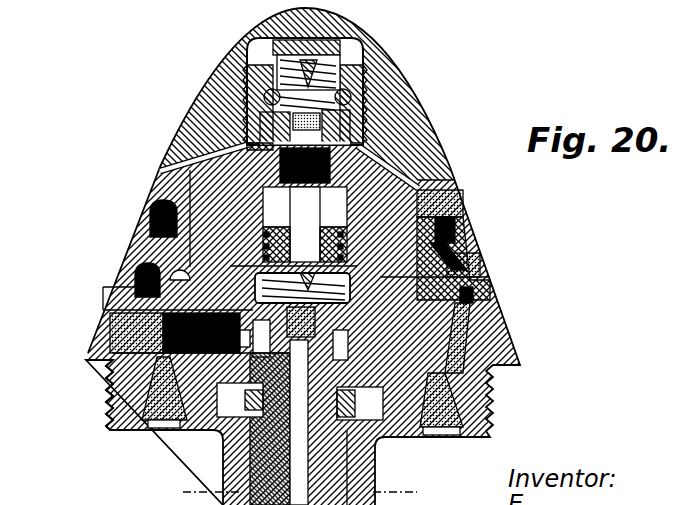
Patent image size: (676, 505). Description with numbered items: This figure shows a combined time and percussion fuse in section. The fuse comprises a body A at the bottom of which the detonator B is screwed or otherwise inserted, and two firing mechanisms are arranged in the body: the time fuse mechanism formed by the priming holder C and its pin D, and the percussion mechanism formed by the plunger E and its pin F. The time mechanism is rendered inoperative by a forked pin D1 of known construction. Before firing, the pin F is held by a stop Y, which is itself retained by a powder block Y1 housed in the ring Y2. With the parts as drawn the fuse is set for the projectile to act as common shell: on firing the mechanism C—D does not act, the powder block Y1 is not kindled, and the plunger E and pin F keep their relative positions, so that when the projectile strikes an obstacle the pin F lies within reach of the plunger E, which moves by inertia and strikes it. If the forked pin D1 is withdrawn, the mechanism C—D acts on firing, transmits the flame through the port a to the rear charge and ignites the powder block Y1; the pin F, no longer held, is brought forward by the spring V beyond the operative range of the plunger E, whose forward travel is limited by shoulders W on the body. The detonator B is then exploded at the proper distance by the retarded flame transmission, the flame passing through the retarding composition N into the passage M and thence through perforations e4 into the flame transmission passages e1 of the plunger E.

The fuse body A is at (110, 398).
The port a is at (120, 422).
The pin of the time fuse firing mechanism D is at (340, 52).
The forked pin D1 is at (262, 68).
The priming holder C is at (327, 140).
The powder block Y1 is at (243, 145).
The ring Y2 is at (262, 154).
The stop Y is at (305, 216).
The spring V is at (262, 248).
The shoulders W is at (250, 262).
The retarding composition N is at (105, 332).
The passage M is at (172, 422).
The detonator B is at (236, 480).
The plunger E is at (325, 468).
The perforations e4 is at (225, 428).
The flame transmission passages e1 is at (300, 448).
The pin of the percussion firing mechanism F is at (493, 273).